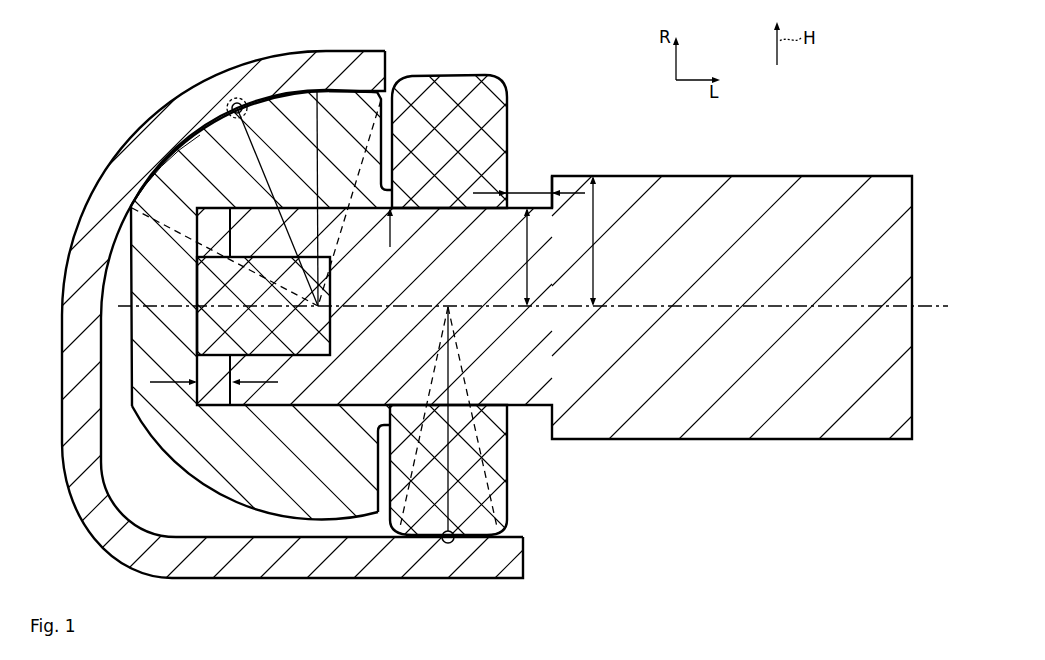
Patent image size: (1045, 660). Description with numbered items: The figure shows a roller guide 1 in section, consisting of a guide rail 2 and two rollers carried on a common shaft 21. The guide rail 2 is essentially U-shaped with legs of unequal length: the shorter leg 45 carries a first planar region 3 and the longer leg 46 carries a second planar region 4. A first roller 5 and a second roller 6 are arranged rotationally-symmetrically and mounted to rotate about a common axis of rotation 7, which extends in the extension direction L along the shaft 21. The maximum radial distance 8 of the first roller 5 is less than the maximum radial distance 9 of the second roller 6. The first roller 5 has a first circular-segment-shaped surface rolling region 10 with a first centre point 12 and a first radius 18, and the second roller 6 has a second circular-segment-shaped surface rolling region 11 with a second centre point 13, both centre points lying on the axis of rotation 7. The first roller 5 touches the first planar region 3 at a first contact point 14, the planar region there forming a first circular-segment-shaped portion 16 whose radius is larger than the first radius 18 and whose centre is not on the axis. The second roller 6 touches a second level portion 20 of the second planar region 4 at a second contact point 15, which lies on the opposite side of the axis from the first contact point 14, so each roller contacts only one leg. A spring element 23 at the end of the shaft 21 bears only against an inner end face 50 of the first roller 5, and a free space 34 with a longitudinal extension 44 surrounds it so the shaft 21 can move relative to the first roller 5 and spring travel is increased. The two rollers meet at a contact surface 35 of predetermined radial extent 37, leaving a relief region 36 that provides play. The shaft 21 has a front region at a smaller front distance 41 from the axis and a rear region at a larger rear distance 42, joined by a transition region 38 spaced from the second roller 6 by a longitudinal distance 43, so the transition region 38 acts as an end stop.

The roller guide 1 is at (98, 65).
The guide rail 2 is at (93, 193).
The first planar region 3 is at (187, 143).
The first circular-segment-shaped portion 16 is at (261, 298).
The second planar region 4 is at (397, 535).
The first roller 5 is at (343, 102).
The second roller 6 is at (497, 145).
The axis of rotation 7 is at (923, 310).
The distance of the first roller 8 is at (306, 90).
The distance of the second roller 9 is at (457, 443).
The first circular-segment-shaped surface rolling region 10 is at (214, 112).
The second circular-segment-shaped surface rolling region 11 is at (497, 546).
The centre point of the first surface rolling region 12 is at (332, 328).
The centre point of the second surface rolling region 13 is at (448, 306).
The first contact point 14 is at (233, 98).
The second contact point 15 is at (448, 545).
The first radius of the first surface rolling region 18 is at (242, 100).
The second level portion 20 is at (525, 535).
The shaft 21 is at (842, 188).
The spring element 23 is at (215, 272).
The free space 34 is at (198, 207).
The contact surface 35 is at (393, 207).
The relief region 36 is at (388, 102).
The extent 37 is at (388, 208).
The transition region 38 is at (550, 185).
The front distance 41 is at (525, 268).
The rear distance 42 is at (597, 265).
The longitudinal distance 43 is at (533, 194).
The longitudinal extension of the free space 44 is at (200, 408).
The shorter leg 45 is at (392, 29).
The longer leg 46 is at (169, 607).
The inner end face 50 is at (197, 376).